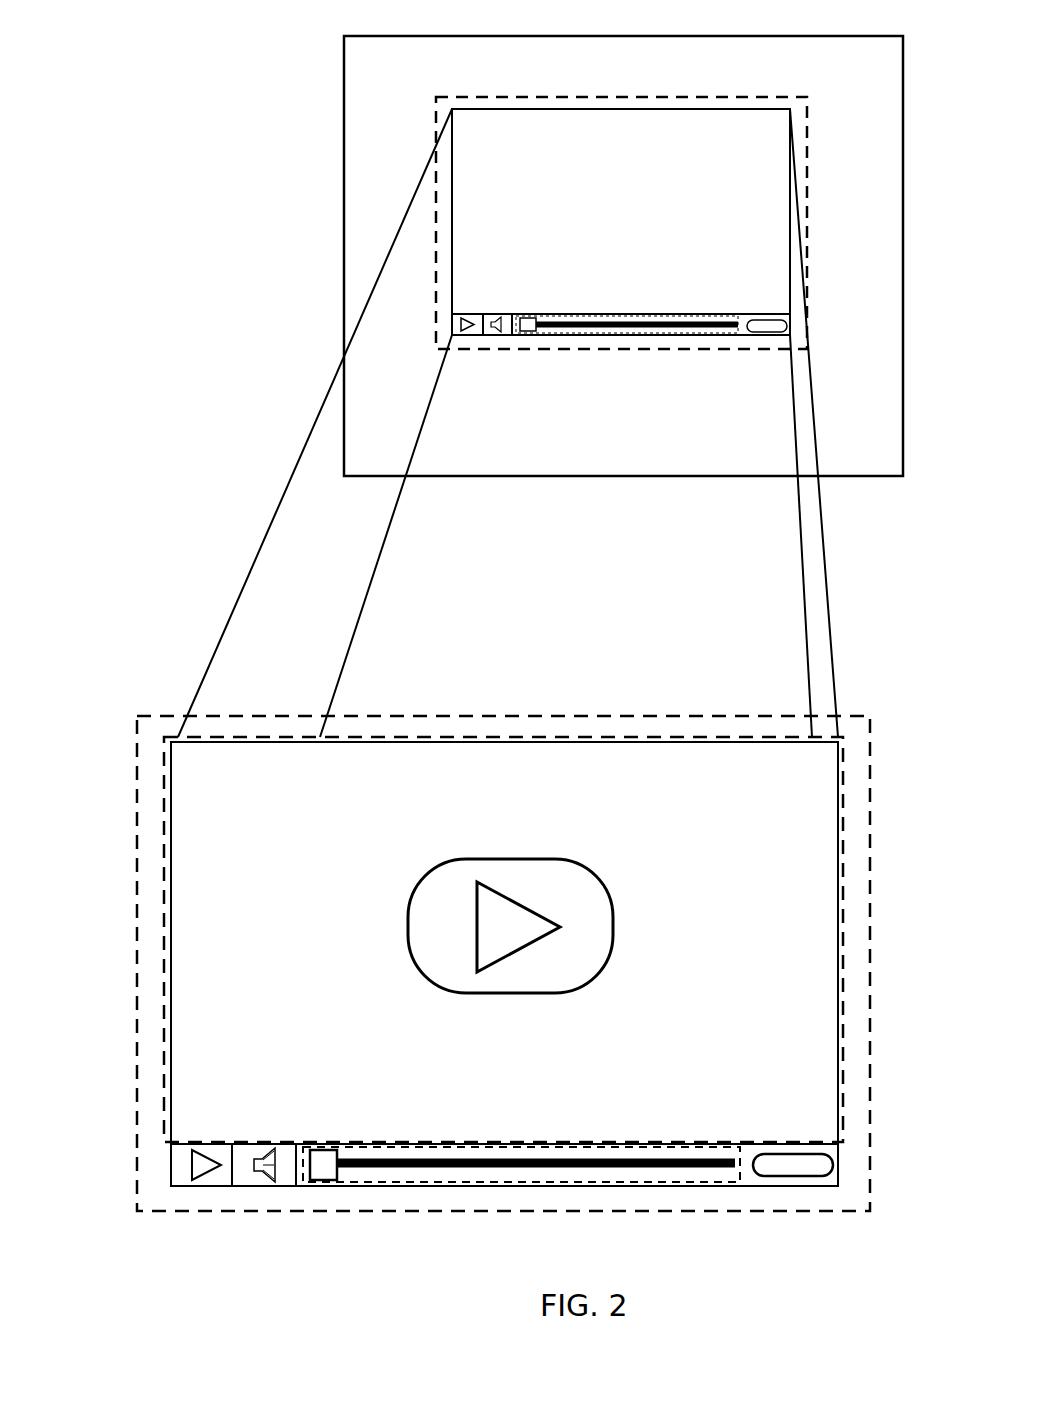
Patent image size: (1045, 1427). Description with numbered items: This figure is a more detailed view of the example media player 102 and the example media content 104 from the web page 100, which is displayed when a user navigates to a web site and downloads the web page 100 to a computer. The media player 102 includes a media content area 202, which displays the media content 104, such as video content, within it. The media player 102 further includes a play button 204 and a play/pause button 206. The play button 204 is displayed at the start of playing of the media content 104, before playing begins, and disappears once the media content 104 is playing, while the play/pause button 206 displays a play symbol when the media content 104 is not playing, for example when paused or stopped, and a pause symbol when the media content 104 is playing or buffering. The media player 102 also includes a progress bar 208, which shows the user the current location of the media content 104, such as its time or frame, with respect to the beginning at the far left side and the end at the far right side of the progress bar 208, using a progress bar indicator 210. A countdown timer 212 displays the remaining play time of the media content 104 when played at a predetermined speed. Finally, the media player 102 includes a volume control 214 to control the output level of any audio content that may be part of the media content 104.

The web page 100 is at (561, 238).
The media player 102 is at (455, 652).
The media content 104 is at (543, 647).
The media content area 202 is at (468, 939).
The play button 204 is at (336, 890).
The play/pause button 206 is at (167, 1190).
The progress bar 208 is at (521, 1197).
The progress bar indicator 210 is at (363, 1217).
The countdown timer 212 is at (751, 1205).
The volume control 214 is at (242, 1194).